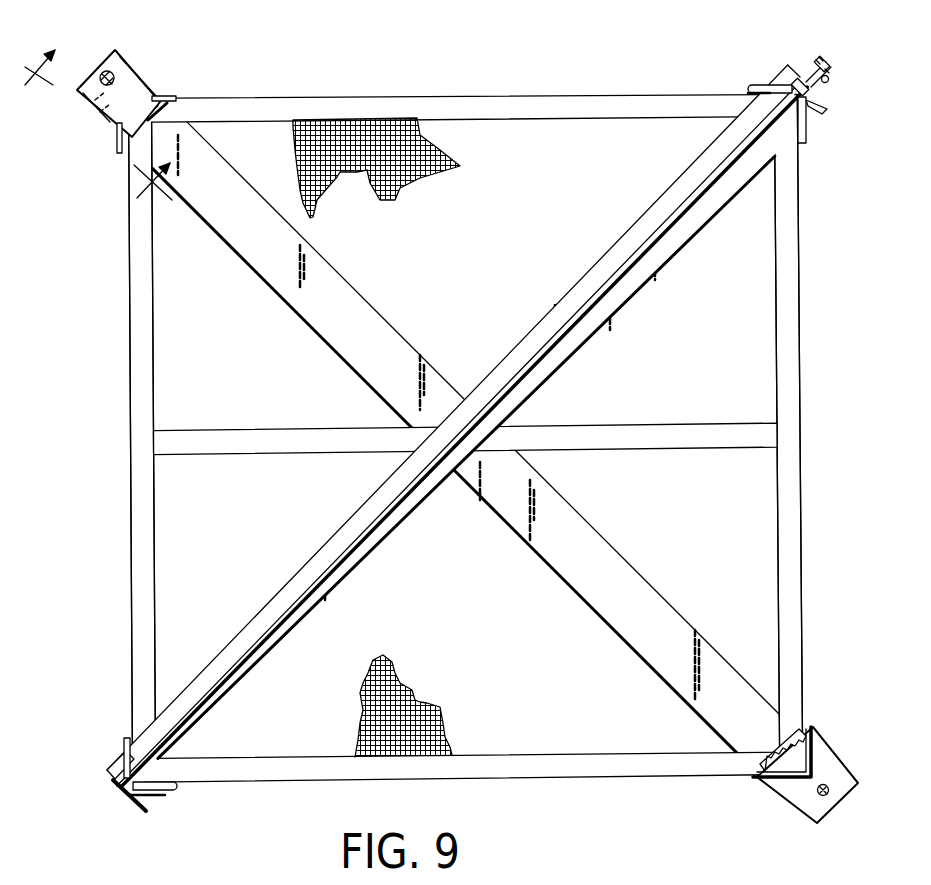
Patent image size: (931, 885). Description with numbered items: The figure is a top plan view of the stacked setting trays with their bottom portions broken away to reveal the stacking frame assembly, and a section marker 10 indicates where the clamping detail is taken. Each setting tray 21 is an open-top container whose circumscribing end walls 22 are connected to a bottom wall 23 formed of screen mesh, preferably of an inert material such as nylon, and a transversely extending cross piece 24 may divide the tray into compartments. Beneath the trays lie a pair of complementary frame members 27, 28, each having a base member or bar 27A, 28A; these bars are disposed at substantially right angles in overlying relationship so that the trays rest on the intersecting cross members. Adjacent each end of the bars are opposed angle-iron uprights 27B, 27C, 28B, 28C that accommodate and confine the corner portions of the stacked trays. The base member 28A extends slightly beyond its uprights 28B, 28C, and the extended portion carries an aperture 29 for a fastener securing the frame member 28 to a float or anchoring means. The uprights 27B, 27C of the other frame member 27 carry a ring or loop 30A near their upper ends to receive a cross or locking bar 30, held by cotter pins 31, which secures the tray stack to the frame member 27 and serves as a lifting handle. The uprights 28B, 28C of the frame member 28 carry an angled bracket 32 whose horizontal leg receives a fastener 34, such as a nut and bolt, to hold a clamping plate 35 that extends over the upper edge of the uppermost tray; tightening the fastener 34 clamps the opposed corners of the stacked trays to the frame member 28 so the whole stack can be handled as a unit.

The section line for FIG. 10 is at (108, 108).
The setting tray 21 is at (804, 268).
The circumscribing end wall 22 is at (143, 388).
The bottom wall 23 is at (347, 119).
The transversely extending cross piece 24 is at (217, 430).
The frame member 27 is at (453, 438).
The base member or bar 27A is at (583, 340).
The upright 27B is at (180, 793).
The upright 27C is at (760, 85).
The frame member 28 is at (465, 437).
The base member or bar 28A is at (330, 265).
The upright 28B is at (814, 740).
The upright 28C is at (168, 95).
The aperture 29 is at (830, 793).
The cross or locking bar 30 is at (268, 630).
The means for receiving the locking bar 30A is at (814, 106).
The cotter pin 31 is at (830, 78).
The angled bracket 32 is at (85, 98).
The fastener 34 is at (103, 73).
The holding clamp or plate 35 is at (783, 748).